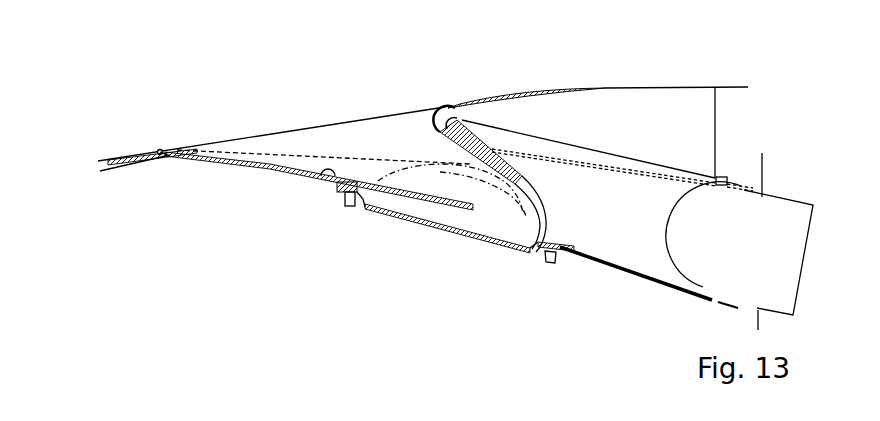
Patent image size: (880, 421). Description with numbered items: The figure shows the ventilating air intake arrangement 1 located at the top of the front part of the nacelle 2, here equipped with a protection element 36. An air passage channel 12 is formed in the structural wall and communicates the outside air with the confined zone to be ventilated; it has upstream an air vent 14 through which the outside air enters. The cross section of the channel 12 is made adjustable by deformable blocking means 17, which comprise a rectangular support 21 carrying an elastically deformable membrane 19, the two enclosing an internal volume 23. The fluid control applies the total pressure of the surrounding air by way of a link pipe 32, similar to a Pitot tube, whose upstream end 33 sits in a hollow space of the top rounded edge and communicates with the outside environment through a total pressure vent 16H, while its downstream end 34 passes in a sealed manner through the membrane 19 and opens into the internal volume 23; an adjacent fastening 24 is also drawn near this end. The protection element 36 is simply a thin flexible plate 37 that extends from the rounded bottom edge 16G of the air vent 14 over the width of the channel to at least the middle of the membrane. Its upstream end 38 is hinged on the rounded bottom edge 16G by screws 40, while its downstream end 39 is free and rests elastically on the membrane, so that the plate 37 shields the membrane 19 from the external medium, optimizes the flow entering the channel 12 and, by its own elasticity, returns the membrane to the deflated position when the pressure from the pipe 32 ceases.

The ventilating air intake arrangement 1 is at (282, 107).
The nacelle 2 is at (686, 82).
The air passage channel 12 is at (611, 219).
The air vent 14 is at (250, 138).
The rounded bottom edge 16G is at (170, 158).
The total pressure vent 16H is at (437, 108).
The blocking means 17 is at (496, 264).
The elastically deformable membrane 19 is at (473, 213).
The rectangular support 21 is at (413, 225).
The internal volume 23 is at (395, 208).
The clip fastener 24 is at (557, 258).
The link pipe 32 is at (523, 176).
The upstream end of the pipe 33 is at (462, 107).
The downstream end of the pipe 34 is at (531, 256).
The protection element 36 is at (355, 160).
The thin flexible plate 37 is at (325, 178).
The upstream end of the flexible plate 38 is at (143, 158).
The downstream end of the flexible plate 39 is at (432, 182).
The screws 40 is at (158, 144).